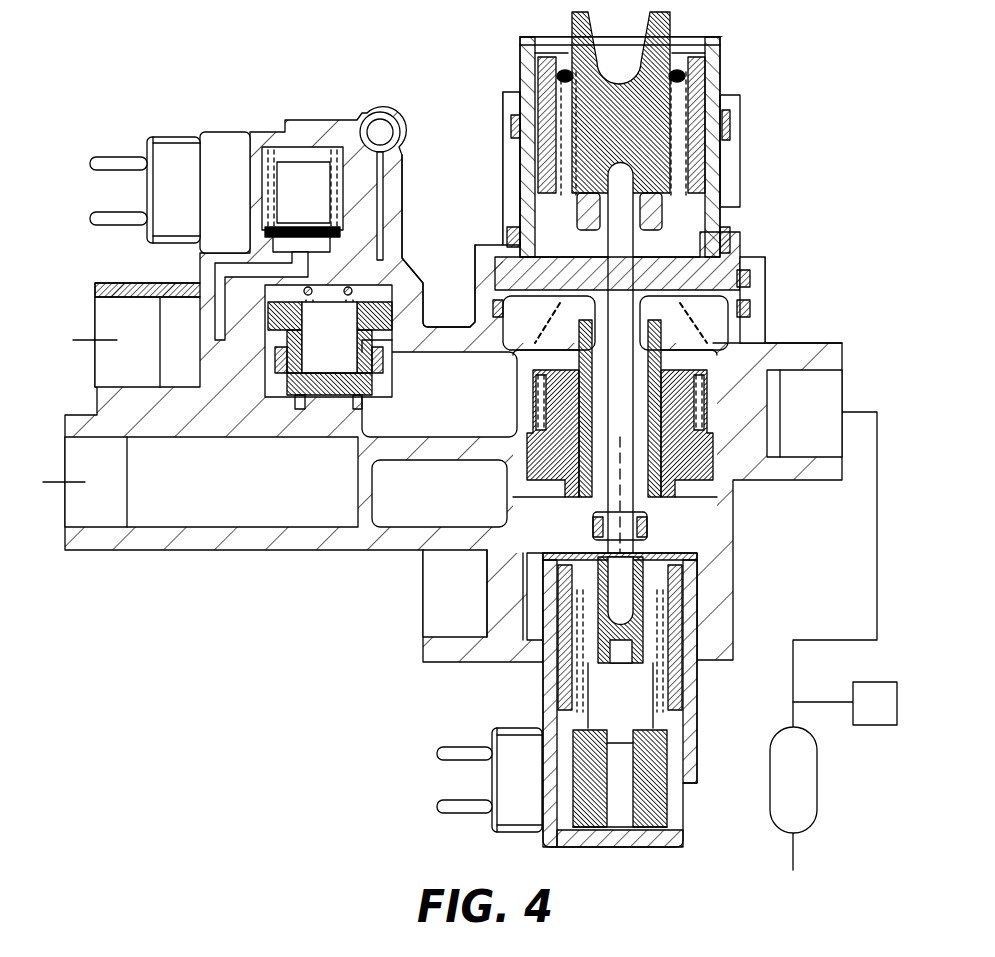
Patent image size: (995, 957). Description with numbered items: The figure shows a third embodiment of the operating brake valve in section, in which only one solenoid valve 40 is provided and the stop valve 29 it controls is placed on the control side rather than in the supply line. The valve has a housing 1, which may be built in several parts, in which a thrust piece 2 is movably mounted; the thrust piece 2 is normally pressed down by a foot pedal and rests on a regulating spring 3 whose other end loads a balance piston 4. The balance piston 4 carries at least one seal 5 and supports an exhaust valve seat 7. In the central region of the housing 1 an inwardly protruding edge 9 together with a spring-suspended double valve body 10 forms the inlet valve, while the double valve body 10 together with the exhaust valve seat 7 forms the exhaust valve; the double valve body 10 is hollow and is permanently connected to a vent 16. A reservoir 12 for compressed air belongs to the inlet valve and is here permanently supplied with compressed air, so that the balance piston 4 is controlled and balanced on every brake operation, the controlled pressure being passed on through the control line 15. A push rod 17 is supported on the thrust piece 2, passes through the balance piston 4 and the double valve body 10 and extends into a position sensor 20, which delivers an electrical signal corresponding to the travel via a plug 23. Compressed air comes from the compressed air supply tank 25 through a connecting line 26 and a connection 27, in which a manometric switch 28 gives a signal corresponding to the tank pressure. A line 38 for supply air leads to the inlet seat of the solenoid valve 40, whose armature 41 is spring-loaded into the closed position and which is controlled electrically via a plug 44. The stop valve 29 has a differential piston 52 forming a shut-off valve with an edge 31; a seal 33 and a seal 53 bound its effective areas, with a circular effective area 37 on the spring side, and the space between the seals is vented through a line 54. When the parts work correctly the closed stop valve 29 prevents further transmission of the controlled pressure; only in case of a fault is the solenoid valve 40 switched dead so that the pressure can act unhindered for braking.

The housing 1 is at (733, 175).
The thrust piece 2 is at (640, 122).
The regulating spring 3 is at (700, 67).
The balance piston 4 is at (707, 250).
The seal 5 is at (763, 275).
The exhaust valve seat 7 is at (687, 347).
The inwardly protruding edge 9 is at (745, 343).
The double valve body 10 is at (742, 355).
The reservoir 12 is at (553, 398).
The control line 15 is at (48, 482).
The vent 16 is at (372, 120).
The push rod 17 is at (627, 505).
The position sensor 20 is at (636, 866).
The plug 23 is at (512, 813).
The compressed air supply tank 25 is at (797, 784).
The connecting line 26 is at (100, 340).
The connection 27 is at (822, 397).
The manometric switch 28 is at (873, 718).
The stop valve 29 is at (412, 250).
The edge 31 is at (290, 398).
The seal 33 is at (268, 318).
The circular effective area 37 is at (385, 287).
The line for supply air 38 is at (218, 290).
The solenoid valve 40 is at (216, 144).
The armature 41 is at (287, 175).
The plug 44 is at (177, 152).
The differential piston 52 is at (390, 313).
The seal 53 is at (278, 345).
The line 54 is at (384, 187).